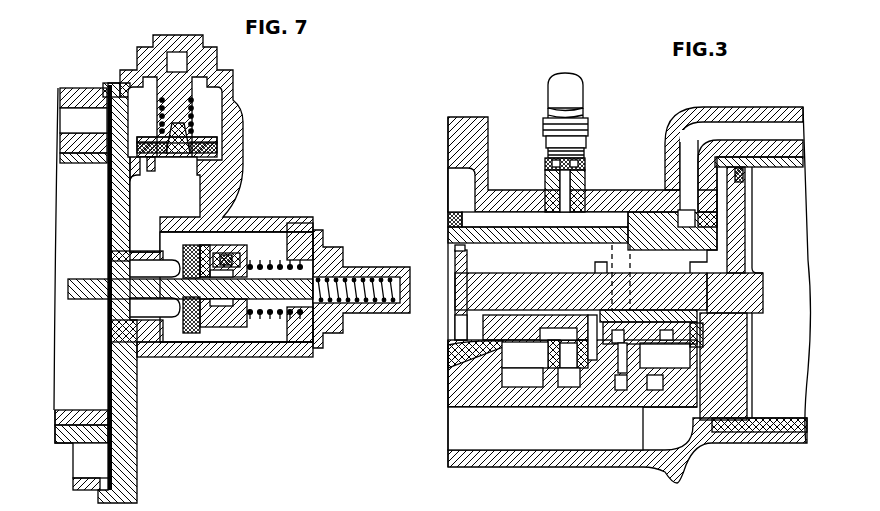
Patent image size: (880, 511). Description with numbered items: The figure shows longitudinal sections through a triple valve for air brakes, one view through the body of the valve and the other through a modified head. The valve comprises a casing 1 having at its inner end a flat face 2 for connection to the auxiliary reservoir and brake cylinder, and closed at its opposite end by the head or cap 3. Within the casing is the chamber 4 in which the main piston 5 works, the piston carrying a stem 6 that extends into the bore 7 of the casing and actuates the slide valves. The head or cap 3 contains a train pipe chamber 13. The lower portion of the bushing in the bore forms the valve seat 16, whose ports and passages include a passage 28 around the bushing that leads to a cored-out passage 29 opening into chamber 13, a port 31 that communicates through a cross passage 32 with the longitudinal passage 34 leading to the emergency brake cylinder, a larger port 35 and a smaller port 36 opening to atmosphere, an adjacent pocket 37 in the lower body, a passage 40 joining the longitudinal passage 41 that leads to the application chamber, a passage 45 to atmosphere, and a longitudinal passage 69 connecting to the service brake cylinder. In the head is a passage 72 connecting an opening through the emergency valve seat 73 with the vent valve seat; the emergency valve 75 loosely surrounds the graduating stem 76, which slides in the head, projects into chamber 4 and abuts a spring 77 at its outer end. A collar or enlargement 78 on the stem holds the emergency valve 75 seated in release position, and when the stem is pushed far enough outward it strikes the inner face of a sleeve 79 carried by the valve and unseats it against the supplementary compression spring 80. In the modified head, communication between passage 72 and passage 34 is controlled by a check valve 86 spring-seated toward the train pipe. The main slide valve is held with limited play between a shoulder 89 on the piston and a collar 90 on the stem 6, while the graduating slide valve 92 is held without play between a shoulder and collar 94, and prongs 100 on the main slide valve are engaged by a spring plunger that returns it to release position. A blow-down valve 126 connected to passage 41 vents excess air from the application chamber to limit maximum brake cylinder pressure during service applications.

In FIG. 7, the casing 1 is at (68, 438).
In FIG. 3, the casing 1 is at (645, 468).
In FIG. 3, the flat face 2 is at (448, 142).
In FIG. 7, the head or cap 3 is at (122, 438).
In FIG. 7, the chamber 4 is at (80, 249).
In FIG. 3, the chamber 4 is at (791, 275).
In FIG. 3, the main piston 5 is at (740, 215).
In FIG. 3, the stem 6 is at (632, 277).
In FIG. 3, the chamber or bore 7 is at (581, 279).
In FIG. 7, the chamber 13 is at (236, 289).
In FIG. 3, the valve seat 16 is at (470, 362).
In FIG. 3, the passage 28 is at (686, 219).
In FIG. 3, the cored-out passage 29 is at (757, 130).
In FIG. 3, the port 31 is at (525, 355).
In FIG. 3, the cross passage 32 is at (522, 380).
In FIG. 7, the longitudinal passage 34 is at (83, 123).
In FIG. 3, the port 35 is at (568, 355).
In FIG. 3, the port 36 is at (594, 358).
In FIG. 3, the pocket 37 is at (569, 380).
In FIG. 3, the passage 40 is at (622, 382).
In FIG. 3, the longitudinal passage 41 is at (538, 223).
In FIG. 3, the passage 45 is at (652, 366).
In FIG. 3, the longitudinal passage 69 is at (545, 428).
In FIG. 7, the passage 72 is at (165, 204).
In FIG. 7, the emergency valve seat 73 is at (190, 335).
In FIG. 7, the emergency valve 75 is at (200, 248).
In FIG. 7, the graduating stem 76 is at (95, 299).
In FIG. 7, the spring 77 is at (366, 290).
In FIG. 7, the collar or enlargement 78 is at (218, 330).
In FIG. 7, the sleeve 79 is at (235, 253).
In FIG. 7, the supplementary compression spring 80 is at (272, 265).
In FIG. 7, the check valve 86 is at (214, 148).
In FIG. 3, the shoulder 89 is at (705, 335).
In FIG. 3, the collar 90 is at (472, 252).
In FIG. 3, the graduating slide valve 92 is at (700, 312).
In FIG. 3, the collar 94 is at (591, 260).
In FIG. 3, the projections or prongs 100 is at (448, 354).
In FIG. 3, the blow-down valve 126 is at (585, 172).